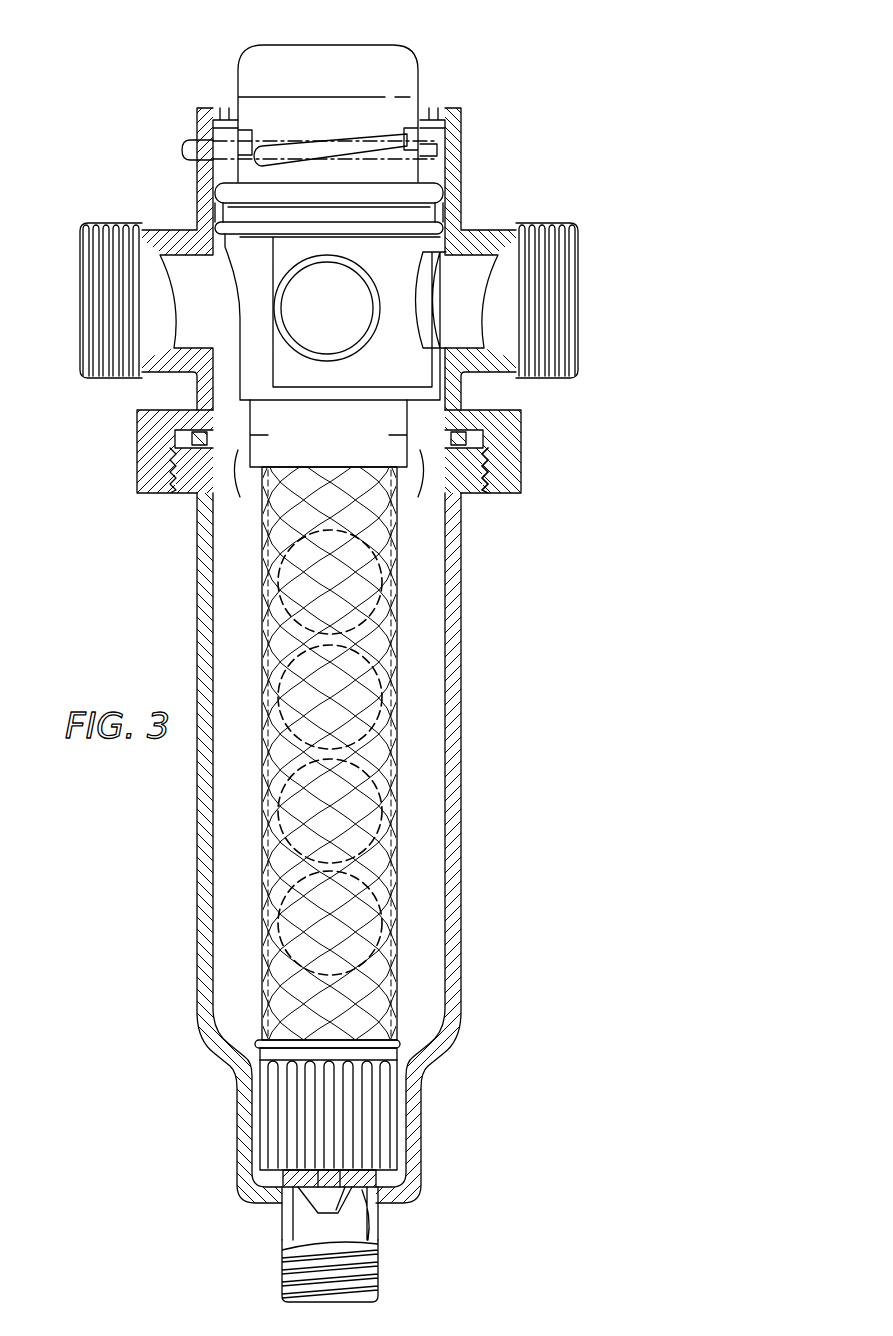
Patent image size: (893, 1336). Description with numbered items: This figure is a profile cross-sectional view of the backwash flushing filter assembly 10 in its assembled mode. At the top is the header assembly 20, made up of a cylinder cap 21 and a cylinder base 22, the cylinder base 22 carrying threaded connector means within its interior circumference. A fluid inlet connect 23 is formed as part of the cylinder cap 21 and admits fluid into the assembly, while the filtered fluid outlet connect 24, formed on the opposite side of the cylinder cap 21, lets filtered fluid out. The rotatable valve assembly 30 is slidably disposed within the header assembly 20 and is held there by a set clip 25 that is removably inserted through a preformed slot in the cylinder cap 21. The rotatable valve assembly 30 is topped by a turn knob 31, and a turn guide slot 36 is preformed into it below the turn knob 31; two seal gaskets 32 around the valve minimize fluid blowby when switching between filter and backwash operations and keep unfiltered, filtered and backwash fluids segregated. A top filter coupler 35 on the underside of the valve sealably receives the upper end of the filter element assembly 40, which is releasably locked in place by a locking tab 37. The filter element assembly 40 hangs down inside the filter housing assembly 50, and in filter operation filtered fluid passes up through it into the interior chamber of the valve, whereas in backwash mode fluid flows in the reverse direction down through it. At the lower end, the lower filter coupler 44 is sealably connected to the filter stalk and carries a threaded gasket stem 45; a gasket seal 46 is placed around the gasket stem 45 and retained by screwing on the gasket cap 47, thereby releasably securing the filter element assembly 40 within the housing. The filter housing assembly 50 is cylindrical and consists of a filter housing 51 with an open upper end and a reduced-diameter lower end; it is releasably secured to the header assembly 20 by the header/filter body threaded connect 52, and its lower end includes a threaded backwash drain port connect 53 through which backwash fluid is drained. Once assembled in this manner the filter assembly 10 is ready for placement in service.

The backwash flushing filter assembly 10 is at (464, 58).
The header assembly 20 is at (466, 132).
The cylinder cap 21 is at (461, 192).
The cylinder base 22 is at (137, 452).
The fluid inlet connect 23 is at (107, 222).
The filtered fluid outlet connect 24 is at (545, 222).
The set clip 25 is at (182, 150).
The rotatable valve assembly 30 is at (236, 302).
The turn knob 31 is at (238, 82).
The seal gaskets 32 is at (390, 205).
The top filter coupler 35 is at (315, 445).
The turn guide slot 36 is at (355, 147).
The locking tab 37 is at (330, 487).
The filter element assembly 40 is at (405, 659).
The lower filter coupler 44 is at (262, 1118).
The threaded gasket stem 45 is at (370, 1225).
The gasket seal 46 is at (408, 1190).
The gasket cap 47 is at (300, 1212).
The filter housing assembly 50 is at (324, 848).
The filter housing 51 is at (461, 850).
The header/filter body threaded connect 52 is at (492, 466).
The backwash drain port connect 53 is at (285, 1280).